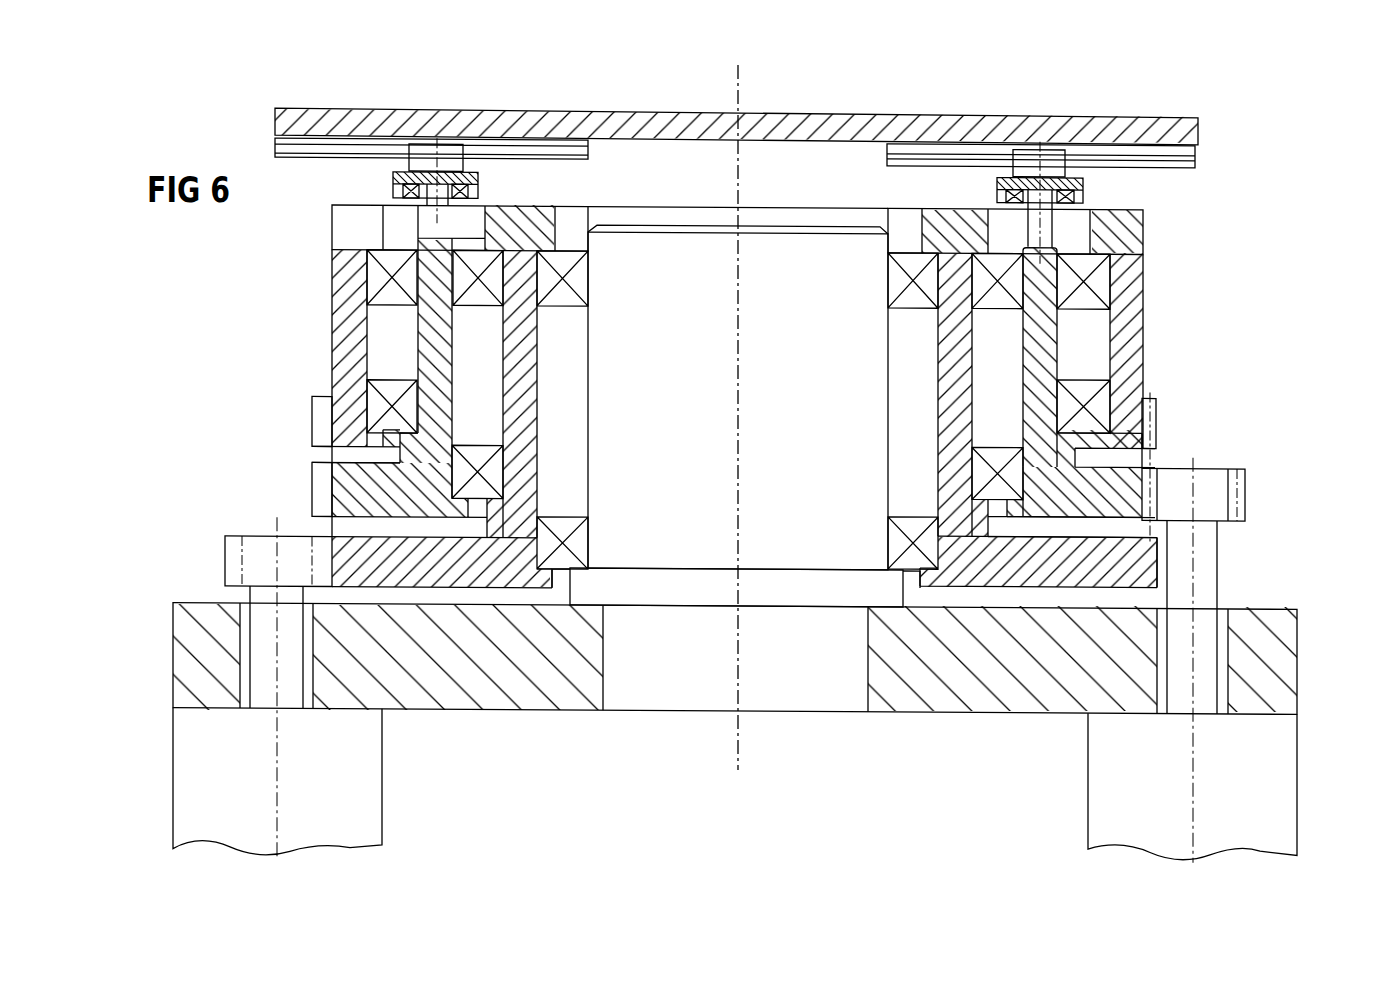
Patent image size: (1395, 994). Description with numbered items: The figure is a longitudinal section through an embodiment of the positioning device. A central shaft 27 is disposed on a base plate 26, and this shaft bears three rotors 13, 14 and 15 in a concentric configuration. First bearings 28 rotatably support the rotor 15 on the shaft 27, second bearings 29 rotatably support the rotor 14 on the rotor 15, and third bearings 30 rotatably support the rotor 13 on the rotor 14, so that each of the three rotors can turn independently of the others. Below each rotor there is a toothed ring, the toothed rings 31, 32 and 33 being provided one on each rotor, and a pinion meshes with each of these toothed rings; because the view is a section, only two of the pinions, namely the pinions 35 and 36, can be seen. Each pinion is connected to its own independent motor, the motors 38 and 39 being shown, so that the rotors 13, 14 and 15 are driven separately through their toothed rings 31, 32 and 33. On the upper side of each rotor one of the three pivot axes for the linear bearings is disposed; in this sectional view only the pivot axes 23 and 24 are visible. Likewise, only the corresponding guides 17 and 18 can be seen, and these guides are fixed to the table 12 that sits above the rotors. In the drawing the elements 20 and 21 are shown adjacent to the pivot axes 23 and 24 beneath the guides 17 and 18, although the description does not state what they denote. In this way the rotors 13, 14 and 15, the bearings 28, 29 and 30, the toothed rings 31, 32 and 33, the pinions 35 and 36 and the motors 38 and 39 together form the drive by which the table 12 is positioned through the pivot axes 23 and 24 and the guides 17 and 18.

The table 12 is at (352, 113).
The rotor 13 is at (1125, 290).
The rotor 14 is at (1040, 355).
The rotor 15 is at (1110, 555).
The guide 17 is at (1122, 150).
The guide 18 is at (550, 143).
The pin 20 is at (1025, 160).
The pin 21 is at (447, 150).
The pivot axis 23 is at (1046, 230).
The pivot axis 24 is at (432, 190).
The base plate 26 is at (910, 630).
The central shaft 27 is at (793, 535).
The first bearings 28 is at (578, 283).
The second bearings 29 is at (470, 300).
The third bearings 30 is at (393, 305).
The toothed ring 31 is at (1165, 417).
The toothed ring 32 is at (315, 485).
The toothed ring 33 is at (1150, 575).
The pinion 35 is at (1222, 487).
The pinion 36 is at (258, 545).
The motor 38 is at (1115, 790).
The motor 39 is at (357, 790).